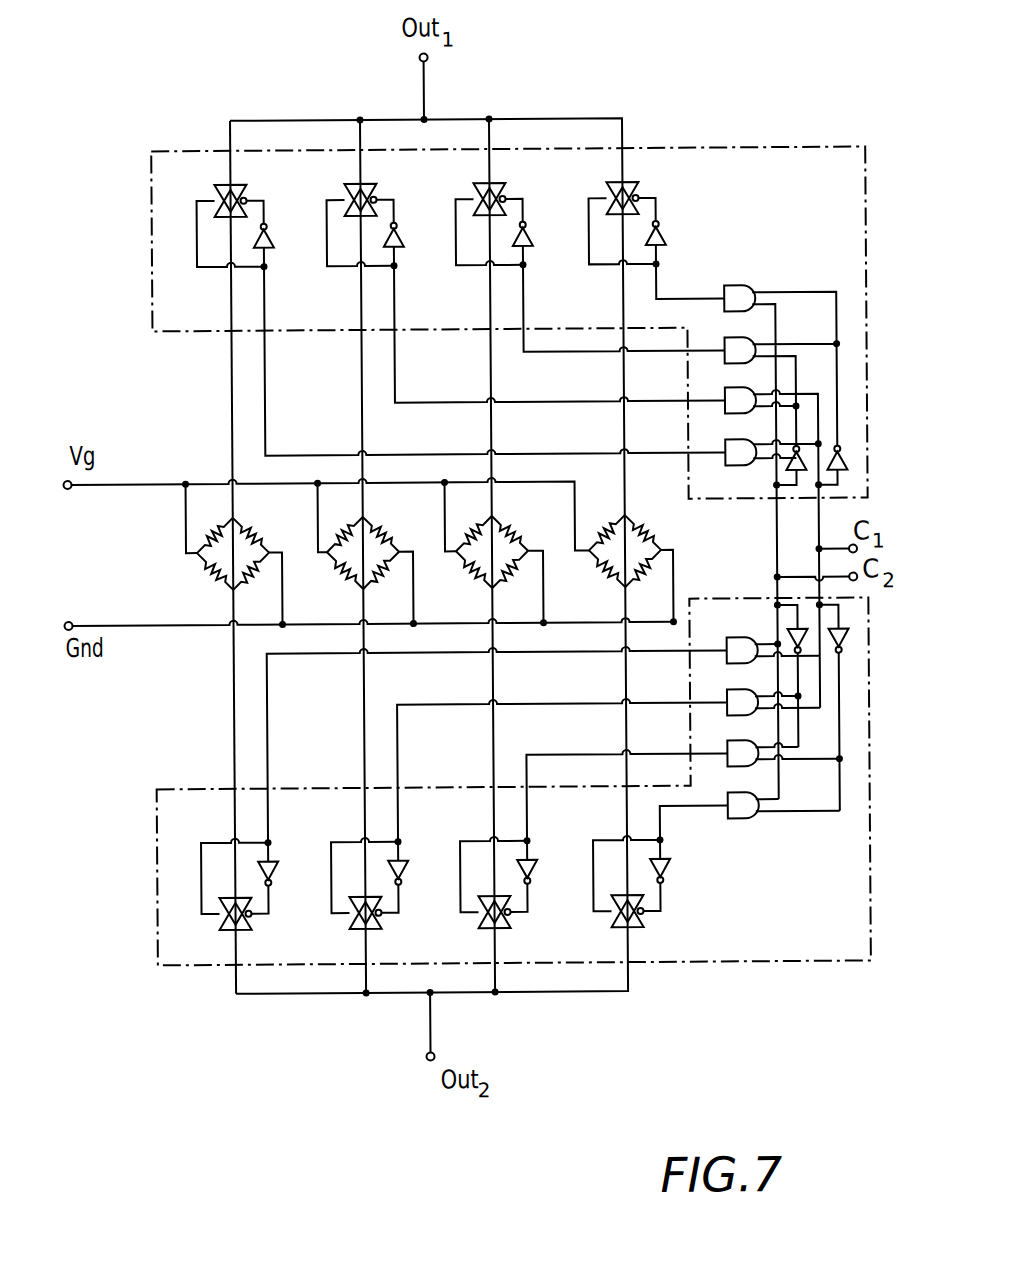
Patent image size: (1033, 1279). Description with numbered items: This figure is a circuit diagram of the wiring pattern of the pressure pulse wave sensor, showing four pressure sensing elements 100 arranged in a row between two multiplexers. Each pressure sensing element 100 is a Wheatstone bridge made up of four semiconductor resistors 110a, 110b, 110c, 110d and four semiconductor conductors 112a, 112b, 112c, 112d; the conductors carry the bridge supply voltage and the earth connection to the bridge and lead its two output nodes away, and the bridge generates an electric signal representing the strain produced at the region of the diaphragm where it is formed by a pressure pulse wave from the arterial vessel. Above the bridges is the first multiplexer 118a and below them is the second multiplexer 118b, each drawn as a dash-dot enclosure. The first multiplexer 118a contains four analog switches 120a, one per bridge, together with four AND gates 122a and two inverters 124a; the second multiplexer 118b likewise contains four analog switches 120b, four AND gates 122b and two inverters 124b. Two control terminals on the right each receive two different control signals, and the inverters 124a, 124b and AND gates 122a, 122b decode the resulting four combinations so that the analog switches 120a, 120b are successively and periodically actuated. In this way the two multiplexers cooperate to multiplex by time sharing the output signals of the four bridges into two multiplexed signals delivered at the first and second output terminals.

The pressure sensing element 100 is at (396, 516).
The semiconductor resistor 110a is at (264, 518).
The semiconductor resistor 110b is at (175, 528).
The semiconductor resistor 110c is at (257, 582).
The semiconductor resistor 110d is at (196, 582).
The semiconductor conductor 112a is at (186, 545).
The semiconductor conductor 112b is at (233, 390).
The semiconductor conductor 112c is at (283, 596).
The semiconductor conductor 112d is at (233, 686).
The first multiplexer 118a is at (720, 149).
The second multiplexer 118b is at (738, 965).
The analog switch 120a is at (614, 182).
The analog switch 120b is at (617, 935).
The AND gate 122a is at (741, 467).
The AND gate 122b is at (741, 821).
The inverter 124a is at (838, 474).
The inverter 124b is at (838, 630).